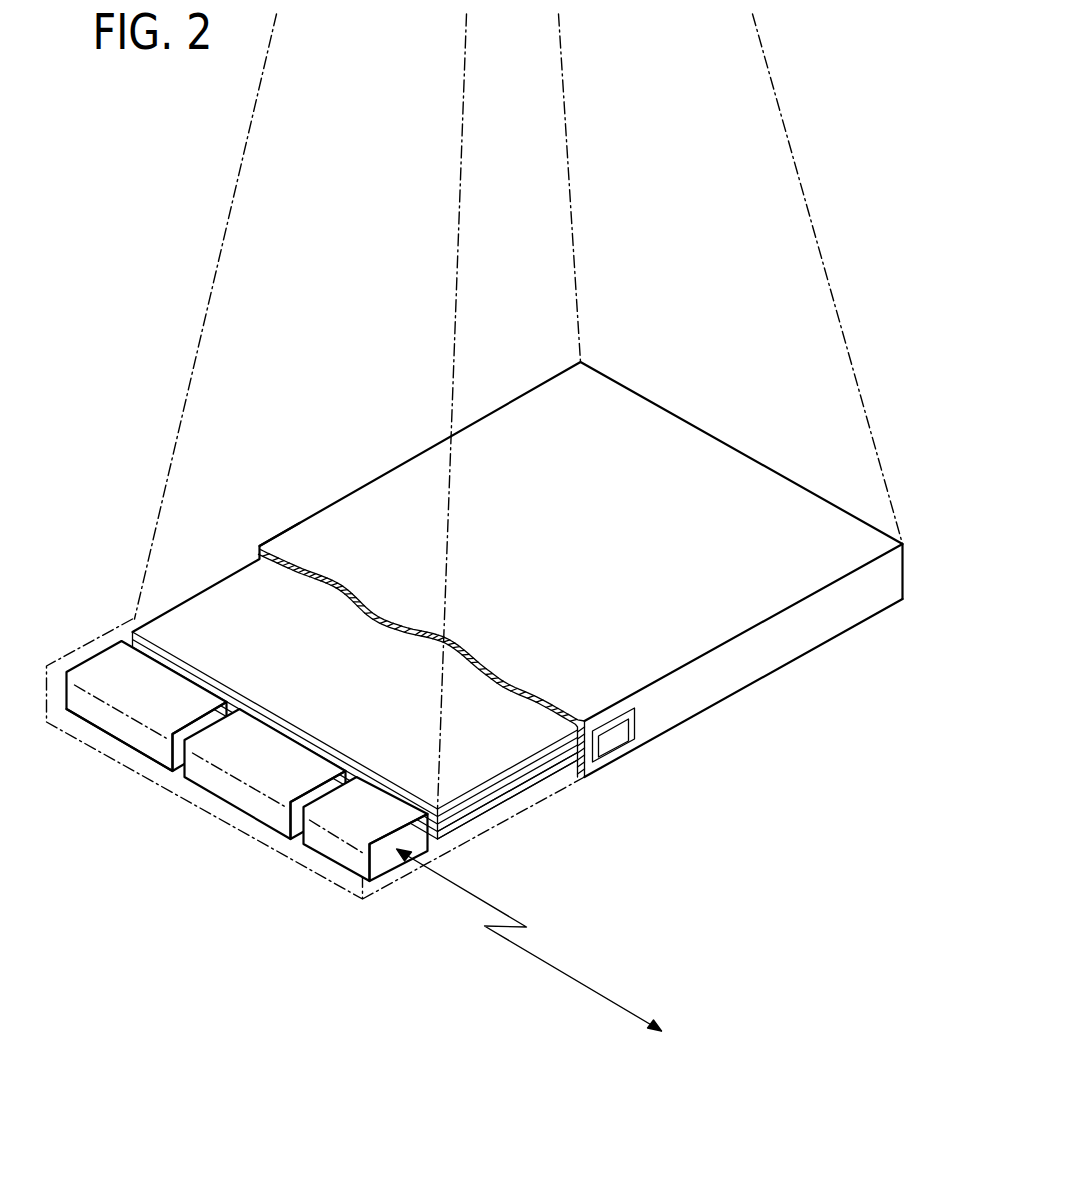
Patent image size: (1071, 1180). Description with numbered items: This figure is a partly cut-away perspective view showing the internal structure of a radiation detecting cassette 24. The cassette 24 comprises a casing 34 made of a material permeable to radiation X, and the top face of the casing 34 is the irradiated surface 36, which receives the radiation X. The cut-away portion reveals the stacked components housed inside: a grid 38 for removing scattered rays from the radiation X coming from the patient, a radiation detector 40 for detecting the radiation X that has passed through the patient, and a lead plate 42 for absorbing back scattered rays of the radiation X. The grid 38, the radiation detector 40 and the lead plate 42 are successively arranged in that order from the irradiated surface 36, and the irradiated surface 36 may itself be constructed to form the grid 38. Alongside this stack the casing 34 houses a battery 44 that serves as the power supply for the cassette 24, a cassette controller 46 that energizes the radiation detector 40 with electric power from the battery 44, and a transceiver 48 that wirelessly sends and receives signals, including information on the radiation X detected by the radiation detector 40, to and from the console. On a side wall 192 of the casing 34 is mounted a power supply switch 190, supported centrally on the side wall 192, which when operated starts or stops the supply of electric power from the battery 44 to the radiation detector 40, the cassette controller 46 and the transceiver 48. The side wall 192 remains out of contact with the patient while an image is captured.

The radiation detecting cassette 24 is at (468, 696).
The casing 34 is at (300, 520).
The irradiated surface 36 is at (518, 569).
The grid 38 is at (497, 697).
The radiation detector 40 is at (528, 777).
The lead plate 42 is at (502, 807).
The battery 44 is at (100, 717).
The cassette controller 46 is at (218, 785).
The transceiver 48 is at (340, 852).
The power supply switch 190 is at (613, 737).
The side wall 192 is at (744, 660).
The radiation X is at (210, 300).